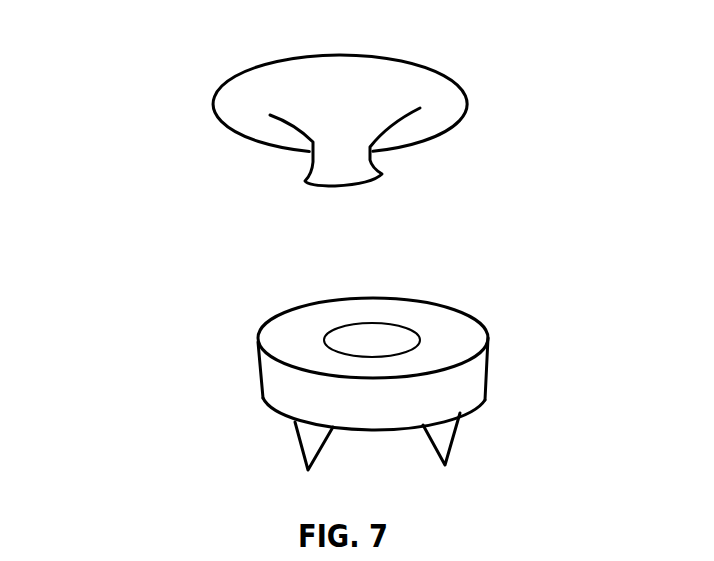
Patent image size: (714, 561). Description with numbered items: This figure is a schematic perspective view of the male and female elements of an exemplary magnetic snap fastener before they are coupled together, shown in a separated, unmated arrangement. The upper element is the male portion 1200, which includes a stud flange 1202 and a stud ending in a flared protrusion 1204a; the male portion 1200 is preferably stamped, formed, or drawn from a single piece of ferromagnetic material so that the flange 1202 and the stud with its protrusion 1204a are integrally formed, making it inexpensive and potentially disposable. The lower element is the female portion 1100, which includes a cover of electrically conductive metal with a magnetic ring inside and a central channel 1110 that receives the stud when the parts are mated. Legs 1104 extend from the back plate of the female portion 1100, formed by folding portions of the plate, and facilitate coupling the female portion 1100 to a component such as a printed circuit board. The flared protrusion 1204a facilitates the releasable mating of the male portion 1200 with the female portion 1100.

The male portion 1200 is at (337, 123).
The stud flange 1202 is at (208, 118).
The flared protrusion 1204a is at (387, 173).
The female portion 1100 is at (324, 361).
The central channel 1110 is at (365, 323).
The legs 1104 is at (298, 440).